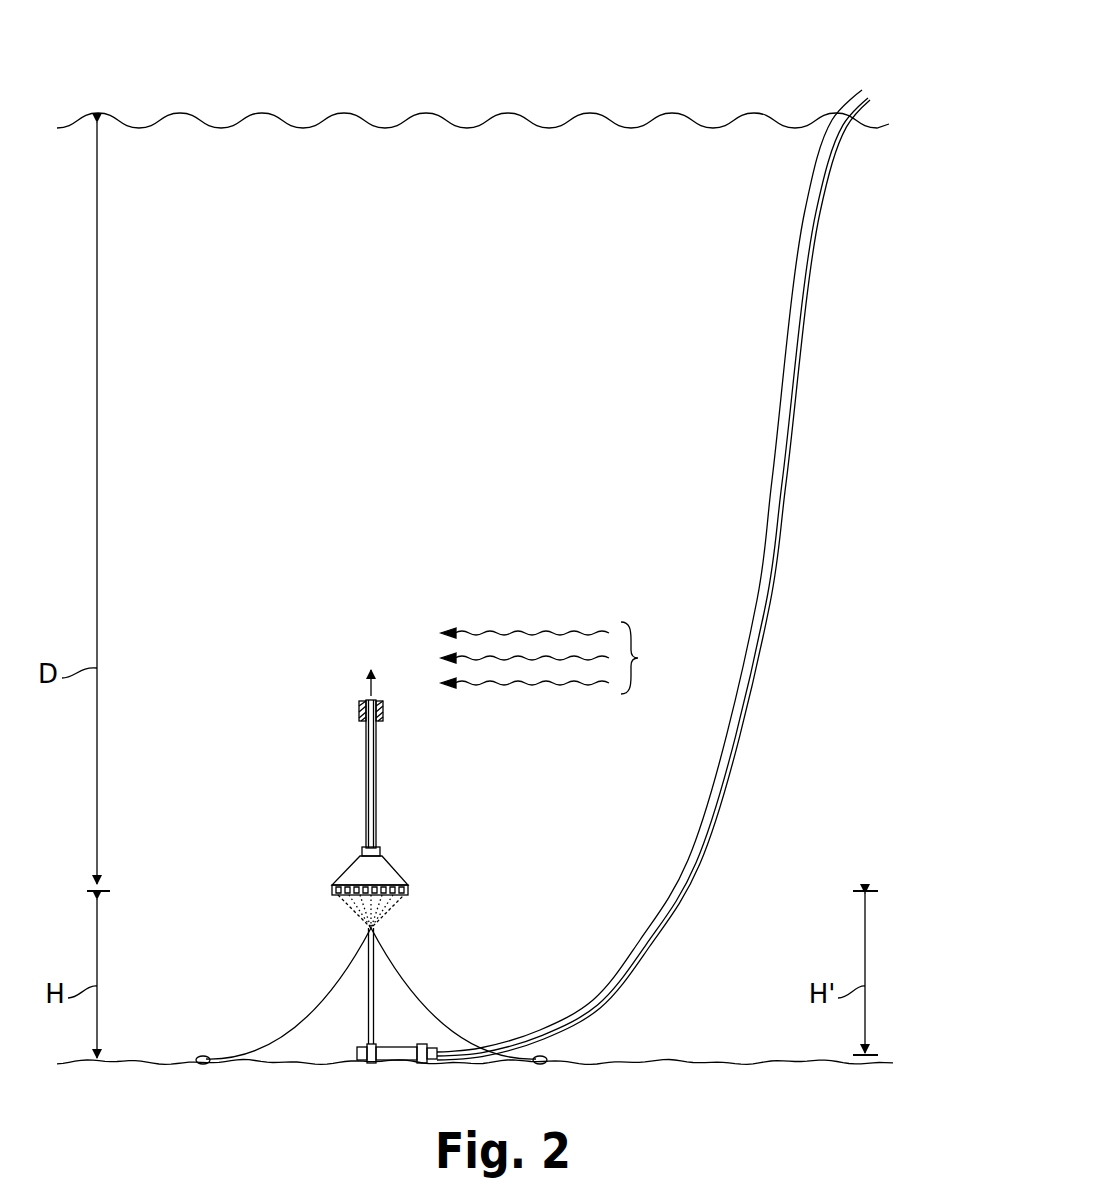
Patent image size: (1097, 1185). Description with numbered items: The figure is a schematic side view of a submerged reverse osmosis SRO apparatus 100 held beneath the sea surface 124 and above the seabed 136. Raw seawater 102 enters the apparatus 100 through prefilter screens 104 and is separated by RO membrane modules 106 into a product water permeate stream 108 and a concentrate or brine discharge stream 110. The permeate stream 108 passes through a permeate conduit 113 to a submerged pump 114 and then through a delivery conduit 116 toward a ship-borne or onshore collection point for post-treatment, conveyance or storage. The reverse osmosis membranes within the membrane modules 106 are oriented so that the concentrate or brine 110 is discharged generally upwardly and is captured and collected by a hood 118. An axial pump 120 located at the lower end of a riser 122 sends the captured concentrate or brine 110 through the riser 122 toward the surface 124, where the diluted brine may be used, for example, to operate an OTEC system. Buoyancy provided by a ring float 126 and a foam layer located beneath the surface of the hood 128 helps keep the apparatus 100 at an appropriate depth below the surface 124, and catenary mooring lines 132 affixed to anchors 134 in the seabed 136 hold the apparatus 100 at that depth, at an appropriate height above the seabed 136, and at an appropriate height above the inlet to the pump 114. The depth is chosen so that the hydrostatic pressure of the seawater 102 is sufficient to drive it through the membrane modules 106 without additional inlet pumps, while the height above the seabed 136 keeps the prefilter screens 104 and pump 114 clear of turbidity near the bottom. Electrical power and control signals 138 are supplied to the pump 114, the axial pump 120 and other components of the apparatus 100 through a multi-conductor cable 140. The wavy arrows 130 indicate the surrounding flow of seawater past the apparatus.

The SRO apparatus 100 is at (403, 796).
The raw seawater 102 is at (350, 919).
The prefilter screens 104 is at (345, 913).
The RO membrane modules 106 is at (409, 892).
The product water permeate stream 108 is at (880, 96).
The concentrate or brine discharge stream 110 is at (360, 676).
The permeate conduit 113 is at (369, 1011).
The submerged pump 114 is at (402, 1049).
The delivery conduit 116 is at (701, 537).
The hood 118 is at (382, 866).
The axial pump 120 is at (381, 853).
The riser 122 is at (378, 771).
The surface 124 is at (441, 117).
The ring float 126 is at (358, 712).
The hood 128 is at (357, 872).
The water current 130 is at (564, 658).
The catenary mooring lines 132 is at (257, 1047).
The anchors 134 is at (203, 1055).
The seabed 136 is at (683, 1059).
The electrical power and control signals 138 is at (870, 84).
The multi-conductor cable 140 is at (769, 537).